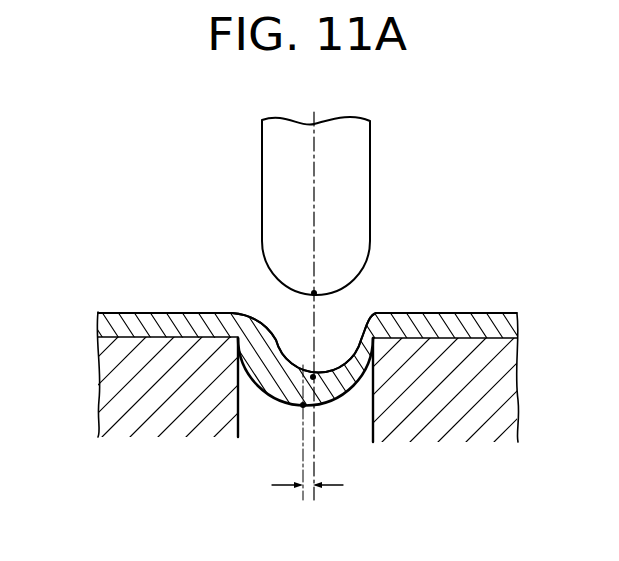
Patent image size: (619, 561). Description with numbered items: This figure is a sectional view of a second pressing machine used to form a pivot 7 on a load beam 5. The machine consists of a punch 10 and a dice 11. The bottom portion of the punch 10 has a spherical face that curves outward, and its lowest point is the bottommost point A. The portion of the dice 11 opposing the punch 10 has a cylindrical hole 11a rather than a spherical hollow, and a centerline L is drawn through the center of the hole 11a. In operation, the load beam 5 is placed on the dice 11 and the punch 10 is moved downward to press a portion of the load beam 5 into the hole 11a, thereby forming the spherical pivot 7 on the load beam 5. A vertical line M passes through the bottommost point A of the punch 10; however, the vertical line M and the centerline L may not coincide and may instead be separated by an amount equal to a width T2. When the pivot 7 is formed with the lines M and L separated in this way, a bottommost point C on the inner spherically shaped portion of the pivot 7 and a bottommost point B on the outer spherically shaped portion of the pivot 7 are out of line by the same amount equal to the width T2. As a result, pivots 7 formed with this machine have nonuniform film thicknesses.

The punch 10 is at (350, 182).
The vertical line M is at (313, 223).
The bottommost point A is at (316, 293).
The load beam 5 is at (478, 320).
The pivot 7 is at (279, 340).
The dice 11 is at (147, 394).
The cylindrical hole 11a is at (333, 425).
The bottommost point C is at (315, 376).
The bottommost point B is at (302, 404).
The centerline L is at (303, 457).
The width T2 is at (307, 510).